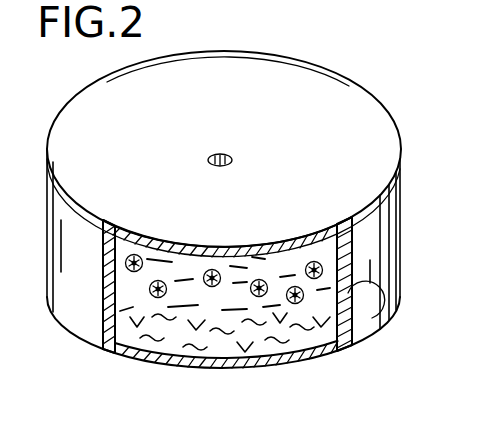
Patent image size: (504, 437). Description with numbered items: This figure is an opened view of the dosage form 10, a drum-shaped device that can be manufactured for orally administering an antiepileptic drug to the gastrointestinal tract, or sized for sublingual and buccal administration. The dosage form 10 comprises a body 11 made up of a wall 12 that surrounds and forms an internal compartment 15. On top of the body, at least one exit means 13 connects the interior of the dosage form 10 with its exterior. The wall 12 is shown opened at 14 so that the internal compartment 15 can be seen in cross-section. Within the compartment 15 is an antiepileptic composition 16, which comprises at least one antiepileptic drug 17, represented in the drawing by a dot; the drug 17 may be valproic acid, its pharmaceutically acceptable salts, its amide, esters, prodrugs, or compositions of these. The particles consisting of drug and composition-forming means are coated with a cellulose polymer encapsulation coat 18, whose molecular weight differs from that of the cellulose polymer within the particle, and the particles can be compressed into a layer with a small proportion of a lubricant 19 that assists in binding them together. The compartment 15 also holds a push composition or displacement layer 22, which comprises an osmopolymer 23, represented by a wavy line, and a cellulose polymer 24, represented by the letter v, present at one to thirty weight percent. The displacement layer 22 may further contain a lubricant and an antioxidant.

The dosage form 10 is at (373, 94).
The body 11 is at (382, 323).
The wall 12 is at (346, 340).
The exit means 13 is at (228, 152).
The opening 14 is at (120, 308).
The internal compartment 15 is at (100, 346).
The antiepileptic composition 16 is at (130, 350).
The antiepileptic drug 17 is at (212, 269).
The encapsulation coat 18 is at (259, 279).
The lubricant 19 is at (301, 246).
The displacement layer 22 is at (309, 363).
The osmopolymer 23 is at (258, 360).
The cellulose polymer 24 is at (207, 365).